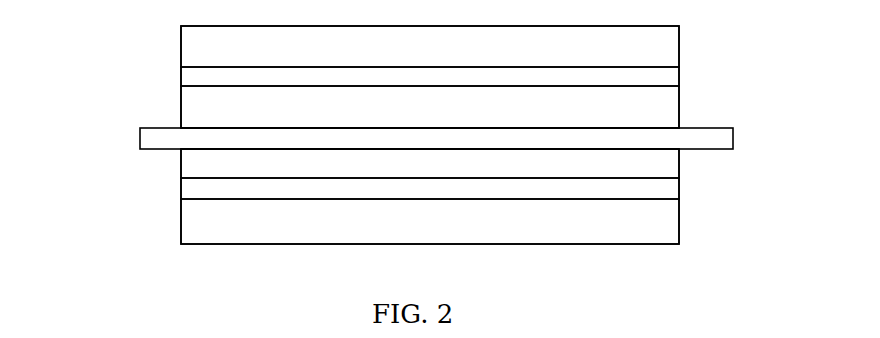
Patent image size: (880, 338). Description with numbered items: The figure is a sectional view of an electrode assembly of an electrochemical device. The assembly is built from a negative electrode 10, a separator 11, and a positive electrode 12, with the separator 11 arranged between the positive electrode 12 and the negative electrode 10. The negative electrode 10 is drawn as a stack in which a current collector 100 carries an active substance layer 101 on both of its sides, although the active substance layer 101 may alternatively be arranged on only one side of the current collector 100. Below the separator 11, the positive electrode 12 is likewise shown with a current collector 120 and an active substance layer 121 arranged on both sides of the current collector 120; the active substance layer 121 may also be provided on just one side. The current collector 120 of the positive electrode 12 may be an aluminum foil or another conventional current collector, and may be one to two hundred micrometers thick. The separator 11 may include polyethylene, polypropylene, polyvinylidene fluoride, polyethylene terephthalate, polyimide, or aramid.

The negative electrode 10 is at (83, 25).
The active substance layer 101 is at (185, 44).
The current collector 100 is at (188, 78).
The separator 11 is at (725, 137).
The positive electrode 12 is at (80, 160).
The active substance layer 121 is at (188, 172).
The current collector 120 is at (673, 195).